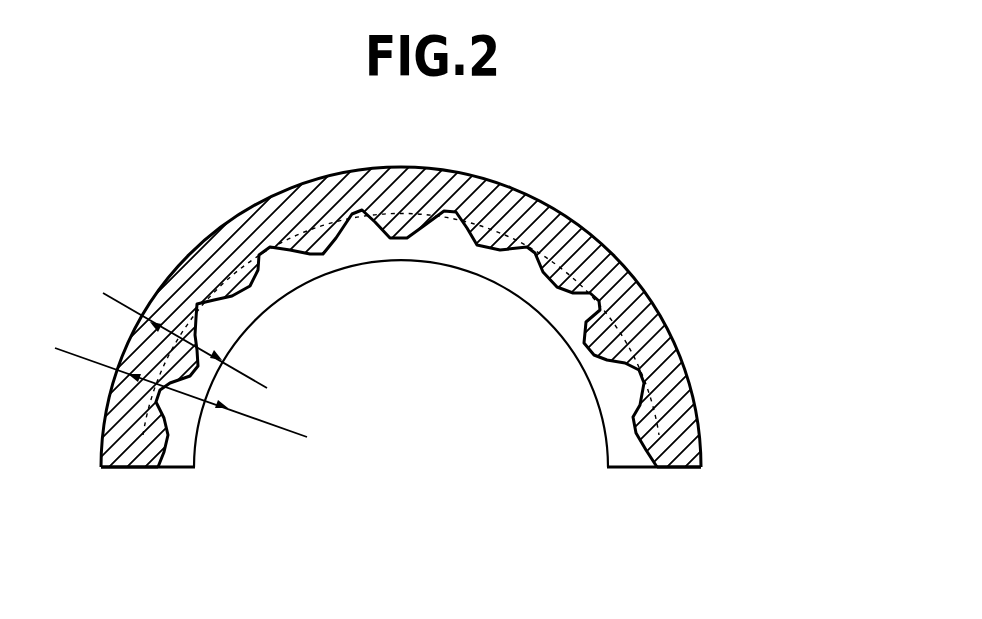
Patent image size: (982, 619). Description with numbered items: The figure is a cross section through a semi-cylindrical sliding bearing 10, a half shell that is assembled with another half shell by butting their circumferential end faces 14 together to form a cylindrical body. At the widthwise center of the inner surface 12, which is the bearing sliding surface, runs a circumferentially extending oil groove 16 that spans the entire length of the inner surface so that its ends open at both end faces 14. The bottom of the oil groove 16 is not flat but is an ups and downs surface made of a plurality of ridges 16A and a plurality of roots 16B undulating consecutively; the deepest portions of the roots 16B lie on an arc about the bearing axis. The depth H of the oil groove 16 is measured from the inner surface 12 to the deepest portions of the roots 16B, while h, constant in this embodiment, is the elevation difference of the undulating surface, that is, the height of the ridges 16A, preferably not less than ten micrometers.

The semi-cylindrical sliding bearing 10 is at (716, 185).
The inner surface 12 is at (203, 441).
The end faces 14 is at (122, 470).
The oil groove 16 is at (287, 277).
The ridges 16A is at (486, 250).
The roots 16B is at (582, 362).
The height of the ridges h is at (190, 336).
The depth of the oil groove H is at (154, 398).